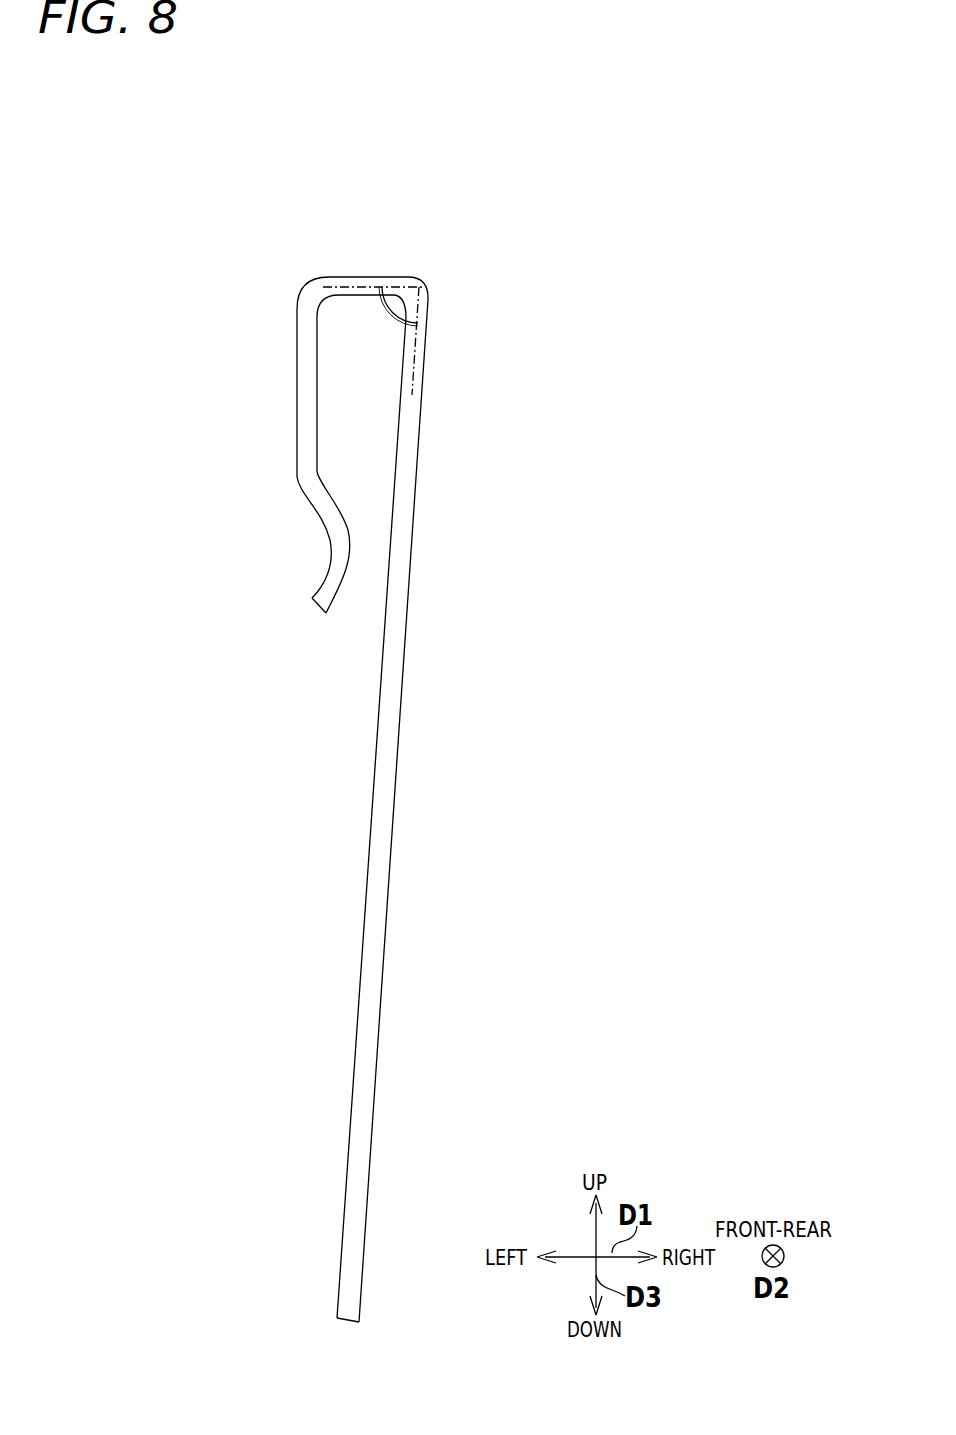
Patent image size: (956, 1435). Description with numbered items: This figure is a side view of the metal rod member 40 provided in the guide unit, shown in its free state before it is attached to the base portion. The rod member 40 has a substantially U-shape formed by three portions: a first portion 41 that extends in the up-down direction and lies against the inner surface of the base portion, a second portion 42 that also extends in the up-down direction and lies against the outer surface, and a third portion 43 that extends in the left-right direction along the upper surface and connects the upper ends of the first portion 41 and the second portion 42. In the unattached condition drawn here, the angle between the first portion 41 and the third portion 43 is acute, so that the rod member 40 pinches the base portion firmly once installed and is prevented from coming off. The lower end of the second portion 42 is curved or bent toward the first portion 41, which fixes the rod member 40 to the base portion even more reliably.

The rod member 40 is at (203, 201).
The first portion 41 is at (385, 825).
The second portion 42 is at (307, 408).
The third portion 43 is at (363, 280).